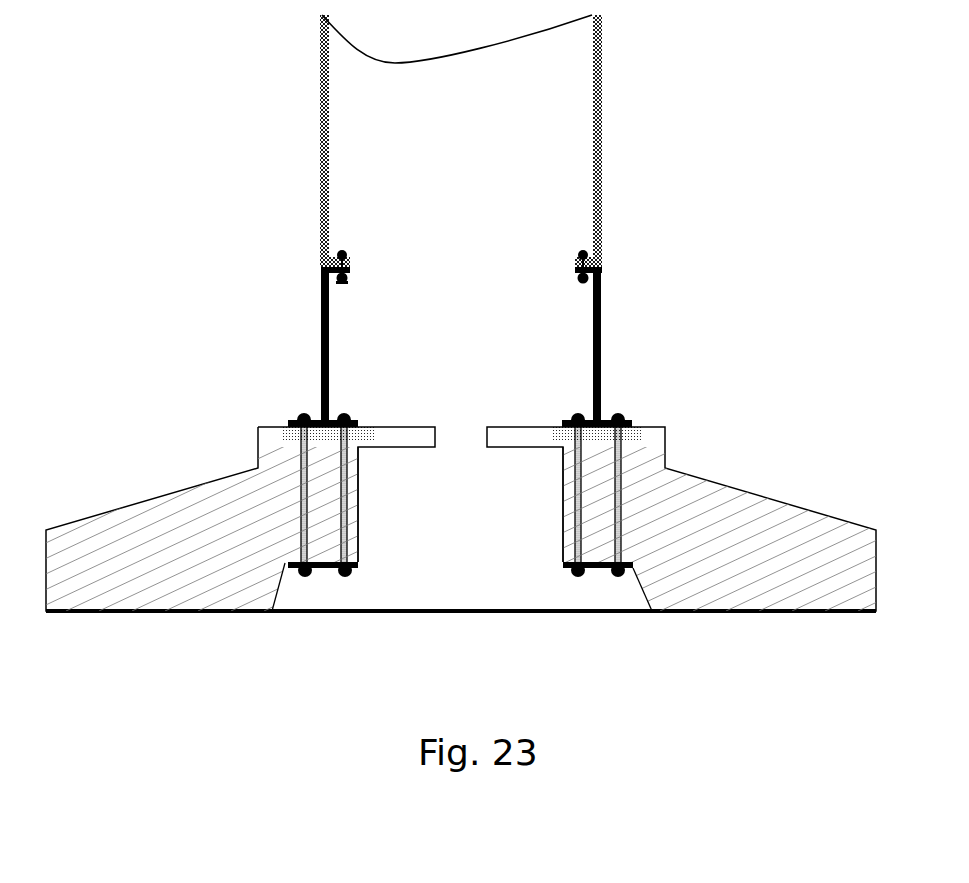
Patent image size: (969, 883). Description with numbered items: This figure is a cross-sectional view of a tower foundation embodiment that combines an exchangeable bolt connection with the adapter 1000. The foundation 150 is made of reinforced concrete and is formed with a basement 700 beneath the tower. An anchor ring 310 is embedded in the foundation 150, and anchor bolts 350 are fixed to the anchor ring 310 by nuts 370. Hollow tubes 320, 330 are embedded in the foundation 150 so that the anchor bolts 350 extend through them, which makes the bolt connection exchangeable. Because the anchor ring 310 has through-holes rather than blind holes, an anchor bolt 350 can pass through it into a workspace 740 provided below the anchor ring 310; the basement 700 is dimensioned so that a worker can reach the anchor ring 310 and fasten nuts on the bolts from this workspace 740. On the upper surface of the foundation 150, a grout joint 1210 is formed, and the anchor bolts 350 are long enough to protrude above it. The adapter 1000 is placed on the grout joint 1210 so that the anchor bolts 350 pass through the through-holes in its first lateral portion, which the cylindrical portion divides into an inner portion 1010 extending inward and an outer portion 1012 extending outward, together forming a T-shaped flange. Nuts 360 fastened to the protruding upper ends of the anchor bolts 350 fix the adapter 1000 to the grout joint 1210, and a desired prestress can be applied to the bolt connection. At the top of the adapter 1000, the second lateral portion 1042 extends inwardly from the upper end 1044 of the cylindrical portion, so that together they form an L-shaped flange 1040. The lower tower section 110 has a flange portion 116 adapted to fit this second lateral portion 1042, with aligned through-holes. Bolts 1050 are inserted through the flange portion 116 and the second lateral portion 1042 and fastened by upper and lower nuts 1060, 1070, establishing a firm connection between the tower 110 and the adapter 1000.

The tower 110 is at (602, 130).
The flange portion 116 is at (618, 259).
The foundation 150 is at (755, 528).
The anchor ring 310 is at (633, 562).
The hollow tube 320 is at (302, 535).
The hollow tube 330 is at (350, 540).
The anchor bolt 350 is at (305, 490).
The nut 360 is at (577, 414).
The nut 370 is at (580, 575).
The basement 700 is at (489, 546).
The workspace 740 is at (326, 600).
The adapter 1000 is at (601, 335).
The inner portion 1010 is at (632, 402).
The outer portion 1012 is at (287, 420).
The L-shaped flange 1040 is at (300, 258).
The second lateral portion 1042 is at (350, 274).
The upper end of cylindrical portion 1044 is at (320, 290).
The bolt 1050 is at (350, 257).
The upper nut 1060 is at (344, 252).
The lower nut 1070 is at (345, 284).
The grout joint 1210 is at (563, 433).